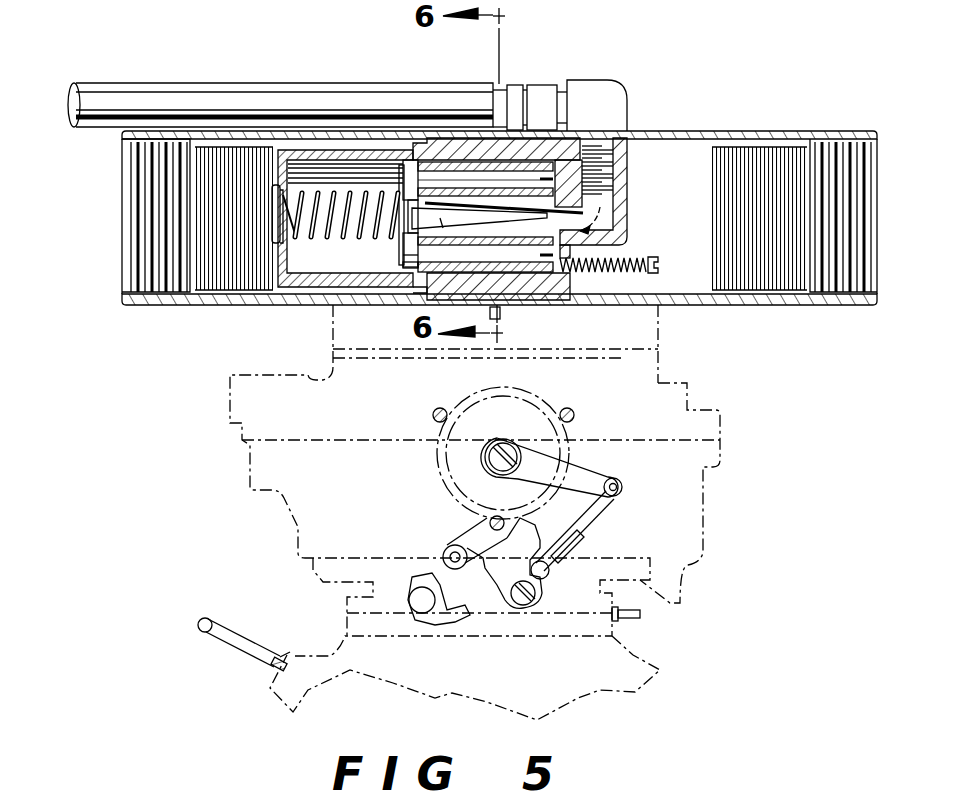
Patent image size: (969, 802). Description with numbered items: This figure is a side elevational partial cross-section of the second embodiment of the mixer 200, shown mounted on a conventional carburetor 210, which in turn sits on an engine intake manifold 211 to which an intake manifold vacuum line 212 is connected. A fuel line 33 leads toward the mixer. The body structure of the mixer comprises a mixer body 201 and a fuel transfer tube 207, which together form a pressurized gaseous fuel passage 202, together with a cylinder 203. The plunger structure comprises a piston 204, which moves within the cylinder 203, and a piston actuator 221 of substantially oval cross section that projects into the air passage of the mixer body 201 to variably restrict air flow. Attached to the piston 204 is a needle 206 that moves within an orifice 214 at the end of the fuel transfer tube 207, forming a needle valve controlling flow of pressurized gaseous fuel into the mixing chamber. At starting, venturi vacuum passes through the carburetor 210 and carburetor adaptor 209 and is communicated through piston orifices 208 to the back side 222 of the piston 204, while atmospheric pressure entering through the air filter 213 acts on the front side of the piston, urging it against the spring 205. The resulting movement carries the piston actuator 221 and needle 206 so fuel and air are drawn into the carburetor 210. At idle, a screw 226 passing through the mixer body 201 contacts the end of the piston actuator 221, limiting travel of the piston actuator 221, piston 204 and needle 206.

The fuel supply pipe 33 is at (207, 92).
The mixer 200 is at (732, 124).
The mixer body 201 is at (623, 157).
The pressurized gaseous fuel passage 202 is at (601, 204).
The cylinder 203 is at (337, 155).
The piston 204 is at (409, 262).
The spring 205 is at (363, 232).
The needle 206 is at (415, 236).
The fuel transfer tube 207 is at (477, 188).
The piston orifices 208 is at (440, 176).
The carburetor adaptor 209 is at (660, 322).
The carburetor 210 is at (720, 428).
The engine intake manifold 211 is at (283, 692).
The intake manifold vacuum line 212 is at (228, 619).
The air filter 213 is at (867, 217).
The orifice 214 is at (425, 193).
The piston actuator 221 is at (535, 275).
The back side 222 is at (404, 262).
The screw 226 is at (656, 258).